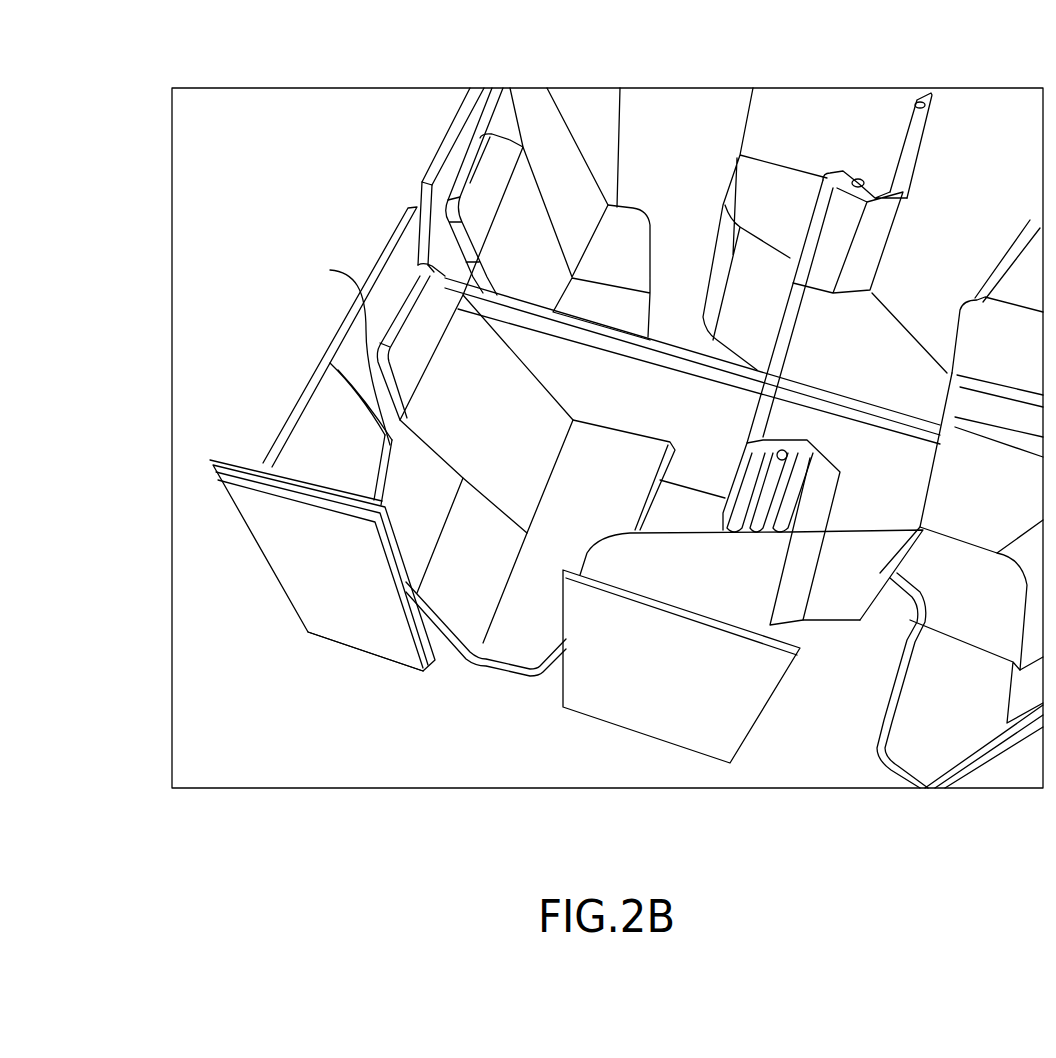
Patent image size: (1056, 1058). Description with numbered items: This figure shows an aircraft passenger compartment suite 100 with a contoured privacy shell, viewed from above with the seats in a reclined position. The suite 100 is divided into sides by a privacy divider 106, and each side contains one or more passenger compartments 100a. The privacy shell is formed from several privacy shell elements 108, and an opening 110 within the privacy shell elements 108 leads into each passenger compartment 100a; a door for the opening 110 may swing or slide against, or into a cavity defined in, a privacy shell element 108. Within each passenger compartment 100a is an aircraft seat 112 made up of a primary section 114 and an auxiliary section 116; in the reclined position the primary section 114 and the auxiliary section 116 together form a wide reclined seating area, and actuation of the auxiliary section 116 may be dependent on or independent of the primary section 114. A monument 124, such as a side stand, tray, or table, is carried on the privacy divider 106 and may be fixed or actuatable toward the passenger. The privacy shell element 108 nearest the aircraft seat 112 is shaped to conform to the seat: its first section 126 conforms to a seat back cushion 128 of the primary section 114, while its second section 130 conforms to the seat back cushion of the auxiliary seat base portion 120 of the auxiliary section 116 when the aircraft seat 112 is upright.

The aircraft passenger compartment suite 100 is at (148, 52).
The passenger compartment 100a is at (698, 165).
The privacy divider 106 is at (642, 745).
The privacy shell element 108 is at (453, 125).
The opening 110 is at (650, 197).
The aircraft seat 112 is at (668, 248).
The primary section 114 is at (721, 438).
The auxiliary section 116 is at (730, 379).
The auxiliary seat base portion 120 is at (330, 372).
The monument 124 is at (696, 356).
The first section 126 is at (455, 170).
The seat back cushion 128 is at (458, 192).
The second section 130 is at (298, 457).